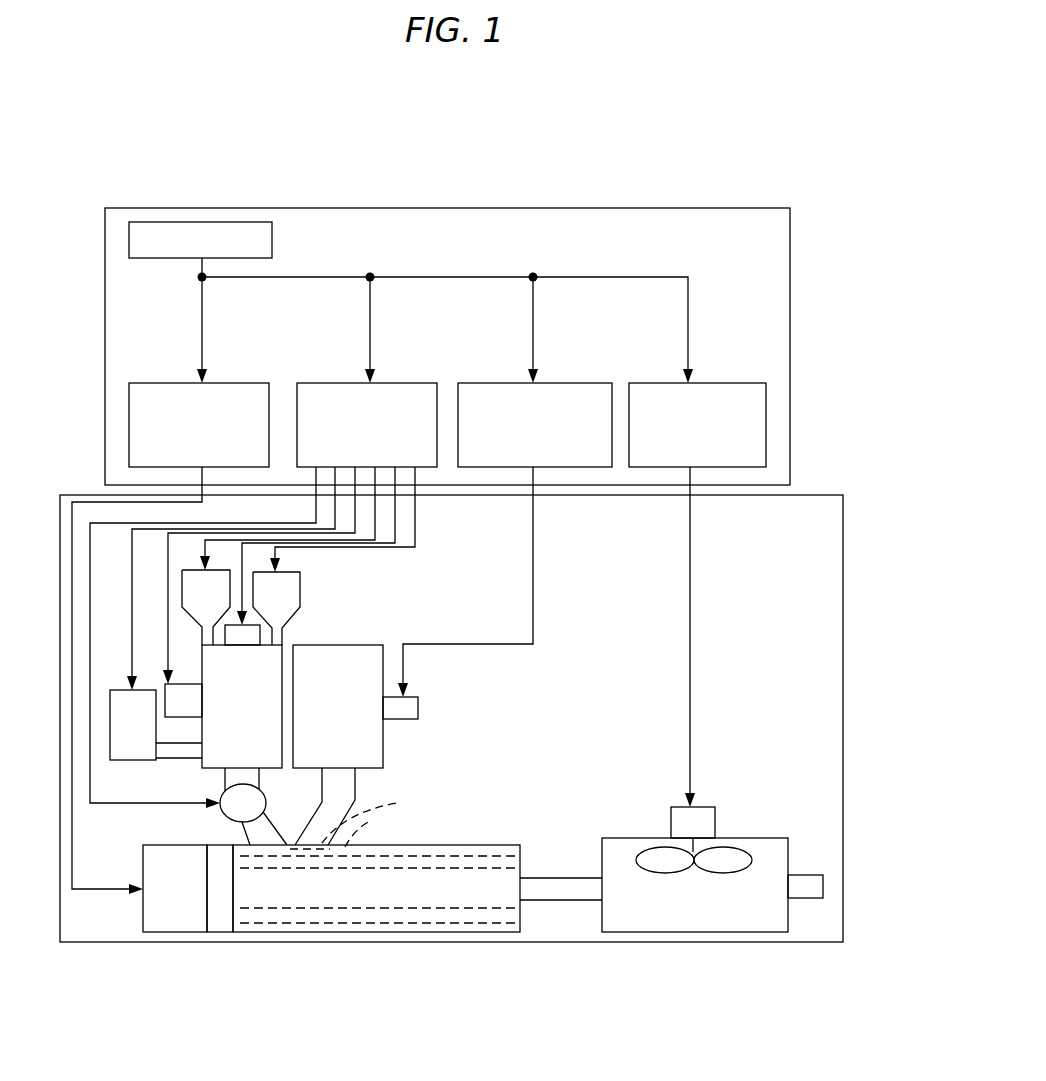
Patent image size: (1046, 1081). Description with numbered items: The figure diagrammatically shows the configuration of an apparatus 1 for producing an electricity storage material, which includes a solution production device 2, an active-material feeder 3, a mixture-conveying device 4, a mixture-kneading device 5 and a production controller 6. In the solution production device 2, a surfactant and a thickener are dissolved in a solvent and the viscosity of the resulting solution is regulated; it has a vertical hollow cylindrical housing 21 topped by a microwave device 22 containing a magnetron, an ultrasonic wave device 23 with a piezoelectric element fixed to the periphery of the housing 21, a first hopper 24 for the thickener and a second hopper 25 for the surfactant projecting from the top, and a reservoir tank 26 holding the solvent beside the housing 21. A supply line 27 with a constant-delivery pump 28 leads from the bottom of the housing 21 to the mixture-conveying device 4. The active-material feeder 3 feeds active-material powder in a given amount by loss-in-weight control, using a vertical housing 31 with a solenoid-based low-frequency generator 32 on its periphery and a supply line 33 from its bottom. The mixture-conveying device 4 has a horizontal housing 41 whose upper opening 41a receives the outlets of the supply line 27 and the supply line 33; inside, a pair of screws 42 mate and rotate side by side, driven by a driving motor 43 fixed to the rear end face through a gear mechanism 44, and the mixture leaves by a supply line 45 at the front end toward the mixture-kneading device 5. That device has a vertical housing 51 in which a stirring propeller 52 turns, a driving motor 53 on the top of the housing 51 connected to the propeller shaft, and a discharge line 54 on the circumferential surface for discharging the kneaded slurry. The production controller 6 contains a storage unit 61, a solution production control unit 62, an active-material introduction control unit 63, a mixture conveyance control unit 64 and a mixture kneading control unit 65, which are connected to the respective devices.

The apparatus for producing an electricity storage material 1 is at (618, 145).
The solution production device 2 is at (341, 598).
The housing 21 is at (275, 655).
The microwave device 22 is at (255, 627).
The ultrasonic wave device 23 is at (188, 684).
The first hopper 24 is at (197, 572).
The second hopper 25 is at (290, 572).
The reservoir tank 26 is at (120, 690).
The supply line 27 is at (268, 822).
The constant-delivery pump 28 is at (220, 795).
The active-material feeder 3 is at (388, 630).
The housing 31 is at (345, 645).
The low-frequency generator 32 is at (418, 695).
The supply line 33 is at (347, 799).
The mixture-conveying device 4 is at (479, 825).
The housing 41 is at (407, 845).
The opening 41a is at (381, 815).
The pair of screws 42 is at (343, 829).
The driving motor 43 is at (160, 845).
The gear mechanism 44 is at (220, 845).
The supply line 45 is at (540, 878).
The mixture-kneading device 5 is at (726, 800).
The housing 51 is at (737, 838).
The stirring propeller 52 is at (748, 850).
The driving motor 53 is at (680, 808).
The discharge line 54 is at (797, 875).
The production controller 6 is at (373, 208).
The storage unit 61 is at (272, 243).
The solution production control unit 62 is at (393, 383).
The active-material introduction control unit 63 is at (553, 383).
The mixture conveyance control unit 64 is at (222, 383).
The mixture kneading control unit 65 is at (705, 383).